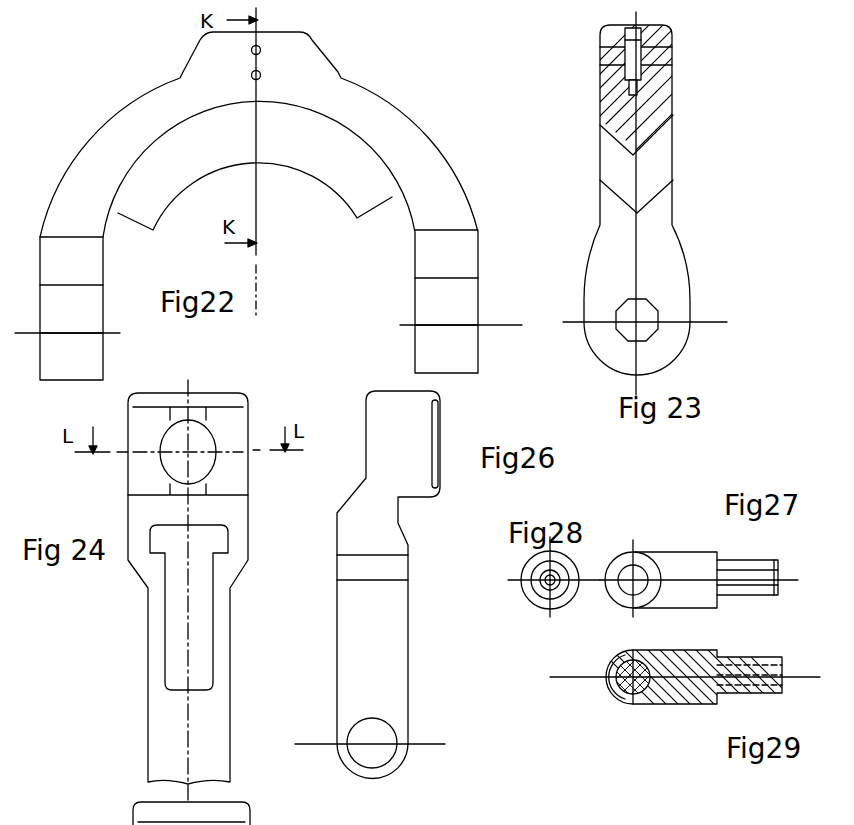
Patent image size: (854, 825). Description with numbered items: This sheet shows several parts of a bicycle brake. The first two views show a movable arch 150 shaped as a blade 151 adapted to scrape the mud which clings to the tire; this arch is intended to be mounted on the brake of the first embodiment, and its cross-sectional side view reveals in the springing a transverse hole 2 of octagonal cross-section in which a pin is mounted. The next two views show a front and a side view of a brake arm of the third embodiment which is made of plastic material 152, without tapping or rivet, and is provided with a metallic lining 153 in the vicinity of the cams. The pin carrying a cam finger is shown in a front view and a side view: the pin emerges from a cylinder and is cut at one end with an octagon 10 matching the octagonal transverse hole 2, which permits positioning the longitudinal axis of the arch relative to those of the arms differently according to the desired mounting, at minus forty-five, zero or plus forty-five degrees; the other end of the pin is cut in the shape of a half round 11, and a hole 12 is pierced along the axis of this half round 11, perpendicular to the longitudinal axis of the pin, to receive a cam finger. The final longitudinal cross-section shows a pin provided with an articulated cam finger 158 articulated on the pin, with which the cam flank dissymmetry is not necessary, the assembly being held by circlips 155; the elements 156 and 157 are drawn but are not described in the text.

In FIG. 22, the movable arch 150 is at (432, 174).
In FIG. 22, the blade 151 is at (348, 188).
In FIG. 23, the blade 151 is at (600, 183).
In FIG. 23, the transverse hole 2 is at (660, 312).
In FIG. 24, the plastic material 152 is at (153, 720).
In FIG. 24, the metallic lining 153 is at (99, 824).
In FIG. 27, the half round 11 is at (608, 601).
In FIG. 27, the hole 12 is at (641, 593).
In FIG. 27, the octagon 10 is at (762, 598).
In FIG. 29, the circlips 155 is at (680, 704).
In FIG. 29, the section boundary 156 is at (612, 705).
In FIG. 29, the sleeve 157 is at (636, 708).
In FIG. 29, the articulated cam finger 158 is at (600, 663).